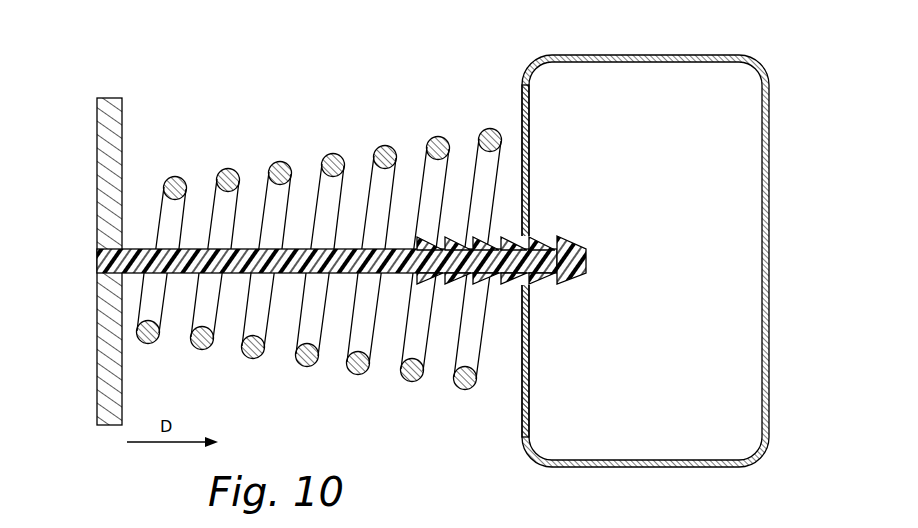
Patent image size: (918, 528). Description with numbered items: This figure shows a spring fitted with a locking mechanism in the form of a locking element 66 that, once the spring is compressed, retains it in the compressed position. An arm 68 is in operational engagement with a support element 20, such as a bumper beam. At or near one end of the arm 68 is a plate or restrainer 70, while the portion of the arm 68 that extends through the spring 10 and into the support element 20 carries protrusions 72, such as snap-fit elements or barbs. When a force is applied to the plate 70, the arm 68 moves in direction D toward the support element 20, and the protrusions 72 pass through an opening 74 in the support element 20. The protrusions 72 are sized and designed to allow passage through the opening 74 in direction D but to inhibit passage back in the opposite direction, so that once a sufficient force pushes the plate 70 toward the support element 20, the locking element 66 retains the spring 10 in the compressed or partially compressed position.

The spring 10 is at (373, 157).
The support element 20 is at (768, 188).
The locking element 66 is at (342, 225).
The arm 68 is at (285, 273).
The plate 70 is at (97, 167).
The protrusions 72 is at (577, 237).
The opening 74 is at (512, 283).